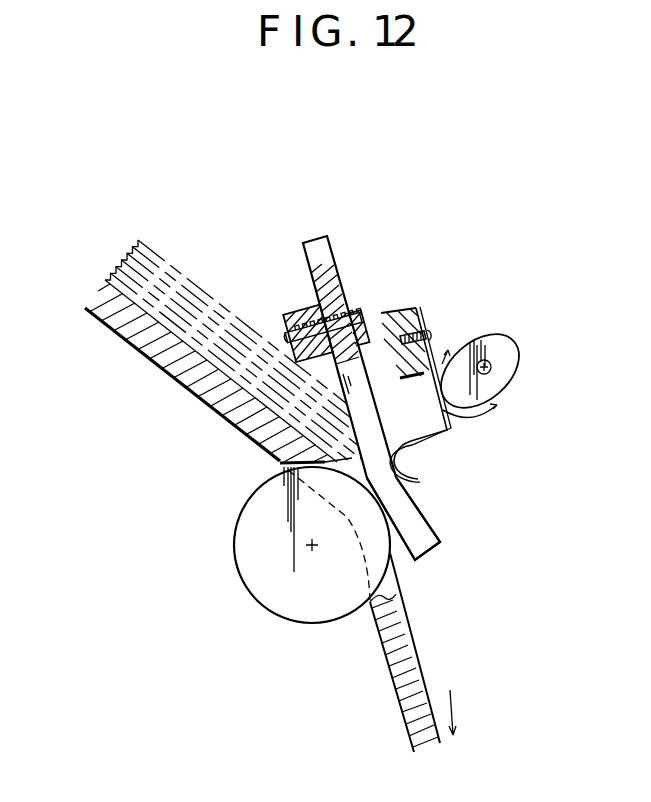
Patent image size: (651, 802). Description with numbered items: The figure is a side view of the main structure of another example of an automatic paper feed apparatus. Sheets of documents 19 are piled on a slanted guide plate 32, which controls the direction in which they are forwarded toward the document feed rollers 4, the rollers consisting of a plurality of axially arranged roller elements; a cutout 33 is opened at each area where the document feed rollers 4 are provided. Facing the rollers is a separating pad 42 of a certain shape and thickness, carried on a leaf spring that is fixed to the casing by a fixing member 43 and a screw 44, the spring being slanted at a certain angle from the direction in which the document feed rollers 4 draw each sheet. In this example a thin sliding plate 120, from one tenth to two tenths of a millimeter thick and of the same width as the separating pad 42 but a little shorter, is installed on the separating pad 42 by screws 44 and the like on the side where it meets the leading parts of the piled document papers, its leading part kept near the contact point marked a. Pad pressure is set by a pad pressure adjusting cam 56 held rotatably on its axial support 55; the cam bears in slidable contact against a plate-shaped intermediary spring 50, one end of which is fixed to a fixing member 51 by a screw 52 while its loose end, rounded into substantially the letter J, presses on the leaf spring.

The sheets of documents 19 is at (162, 258).
The guide plate 32 is at (137, 347).
The sliding plate 120 is at (232, 426).
The fixing member 43 is at (338, 254).
The separating pad 42 is at (442, 548).
The screw 44 is at (283, 334).
The fixing member 51 is at (394, 311).
The screw 52 is at (429, 329).
The intermediary spring 50 is at (455, 430).
The pad pressure adjusting cam 56 is at (512, 347).
The axial support 55 is at (492, 370).
The document feed rollers 4 is at (240, 563).
The cutout 33 is at (396, 594).